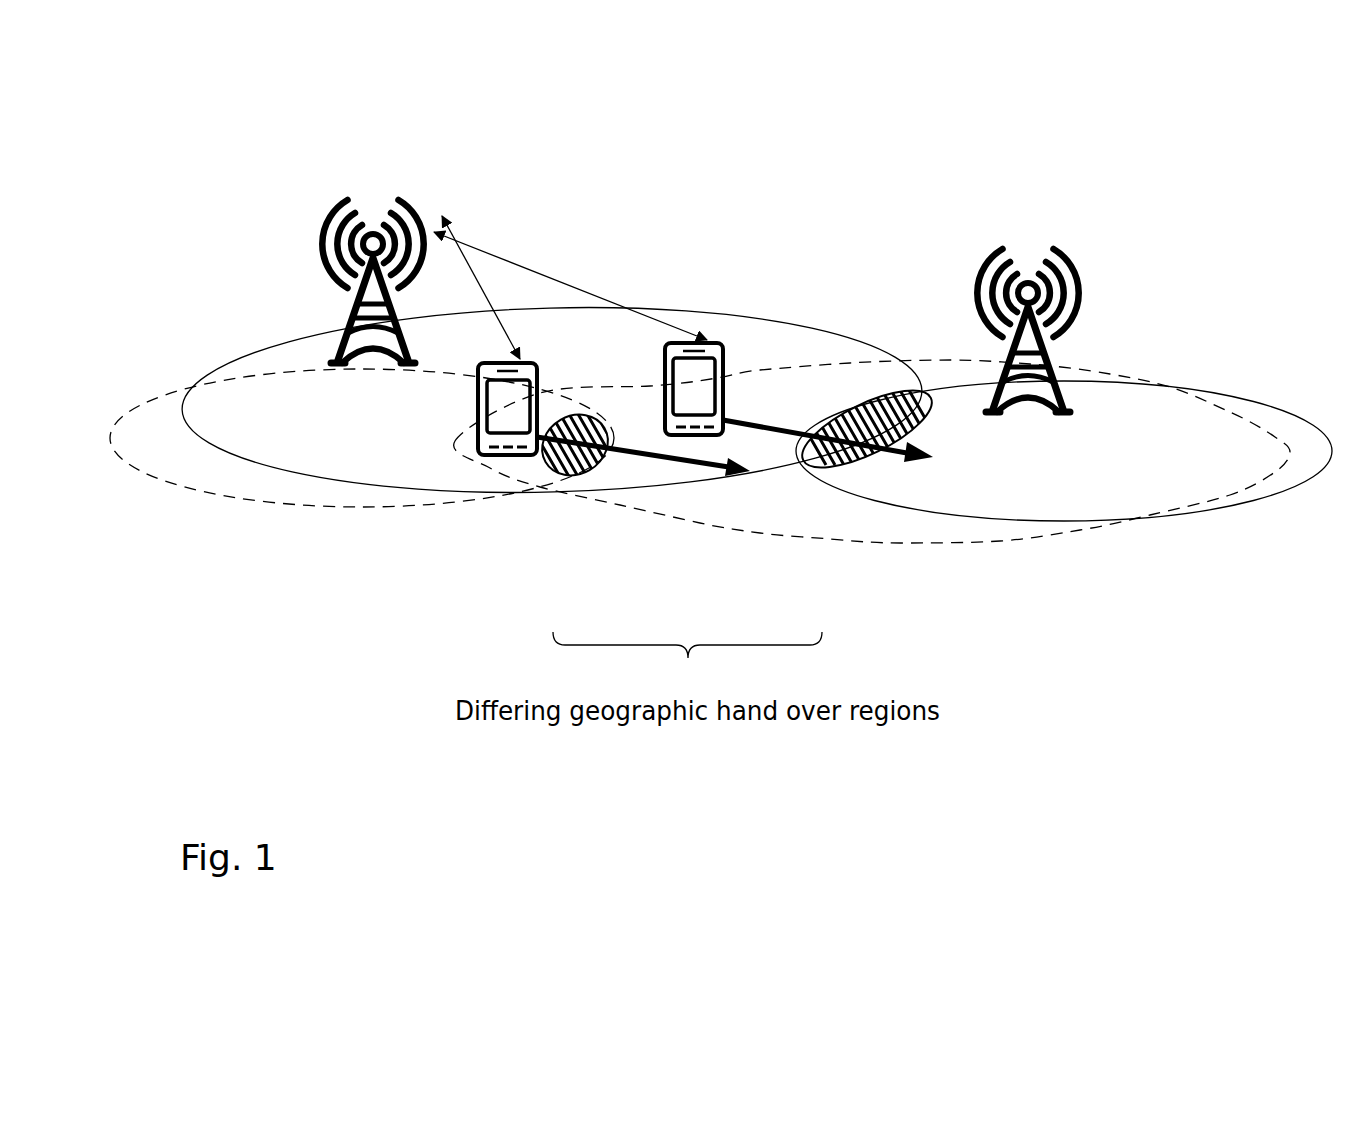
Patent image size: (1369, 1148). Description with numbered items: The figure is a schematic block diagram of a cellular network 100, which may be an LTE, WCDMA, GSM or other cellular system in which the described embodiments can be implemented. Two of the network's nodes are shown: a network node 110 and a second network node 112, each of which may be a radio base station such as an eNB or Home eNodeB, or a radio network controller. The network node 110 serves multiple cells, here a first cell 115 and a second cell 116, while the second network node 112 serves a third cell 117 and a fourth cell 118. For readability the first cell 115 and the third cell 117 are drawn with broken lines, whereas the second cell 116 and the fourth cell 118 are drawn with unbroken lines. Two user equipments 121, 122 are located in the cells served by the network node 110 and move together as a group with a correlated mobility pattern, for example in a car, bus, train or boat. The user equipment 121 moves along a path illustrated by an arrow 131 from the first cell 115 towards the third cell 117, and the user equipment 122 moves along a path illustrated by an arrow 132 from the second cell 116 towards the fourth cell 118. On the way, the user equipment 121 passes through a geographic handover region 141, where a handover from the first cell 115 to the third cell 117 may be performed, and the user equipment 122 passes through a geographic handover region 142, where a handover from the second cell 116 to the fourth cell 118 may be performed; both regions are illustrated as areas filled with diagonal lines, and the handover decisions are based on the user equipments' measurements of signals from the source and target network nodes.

The cellular network 100 is at (400, 614).
The network node 110 is at (358, 287).
The second network node 112 is at (1052, 338).
The first cell 115 is at (170, 395).
The second cell 116 is at (765, 318).
The third cell 117 is at (920, 358).
The fourth cell 118 is at (1297, 413).
The user equipment 121 is at (478, 400).
The user equipment 122 is at (744, 418).
The arrow 131 is at (657, 460).
The arrow 132 is at (772, 432).
The geographic handover region 141 is at (560, 470).
The geographic handover region 142 is at (818, 465).